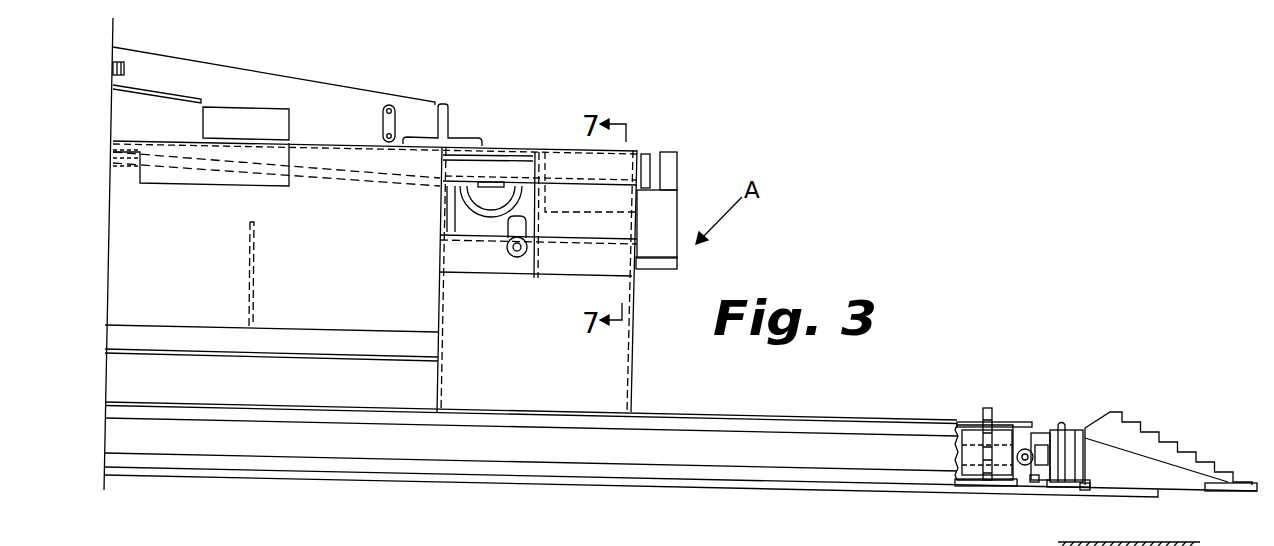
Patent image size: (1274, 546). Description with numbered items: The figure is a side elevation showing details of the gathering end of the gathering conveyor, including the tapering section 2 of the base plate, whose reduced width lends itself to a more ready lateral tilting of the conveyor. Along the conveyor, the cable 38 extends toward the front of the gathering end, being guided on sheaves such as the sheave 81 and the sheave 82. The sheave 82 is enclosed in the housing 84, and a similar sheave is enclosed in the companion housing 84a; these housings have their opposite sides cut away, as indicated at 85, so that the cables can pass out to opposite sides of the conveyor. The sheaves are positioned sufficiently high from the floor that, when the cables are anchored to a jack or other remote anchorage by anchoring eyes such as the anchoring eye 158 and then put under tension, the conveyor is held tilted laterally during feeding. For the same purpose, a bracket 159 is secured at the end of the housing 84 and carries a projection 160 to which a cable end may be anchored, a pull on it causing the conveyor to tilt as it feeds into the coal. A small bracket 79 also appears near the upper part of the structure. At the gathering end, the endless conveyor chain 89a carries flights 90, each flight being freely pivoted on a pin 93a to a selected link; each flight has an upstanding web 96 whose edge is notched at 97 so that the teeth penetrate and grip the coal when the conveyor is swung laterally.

The tapering section 2 is at (858, 490).
The cable 38 is at (353, 181).
The bracket 79 is at (127, 66).
The sheave 81 is at (124, 176).
The sheave 82 is at (494, 216).
The housing 84 is at (499, 155).
The housing 84a is at (605, 226).
The cut-away side 85 is at (477, 228).
The endless conveyor chain 89a is at (1037, 437).
The flight 90 is at (1140, 472).
The pin 93a is at (1063, 455).
The upstanding web 96 is at (985, 440).
The notch 97 is at (986, 413).
The anchoring eye 158 is at (521, 257).
The bracket 159 is at (658, 212).
The projection 160 is at (671, 163).